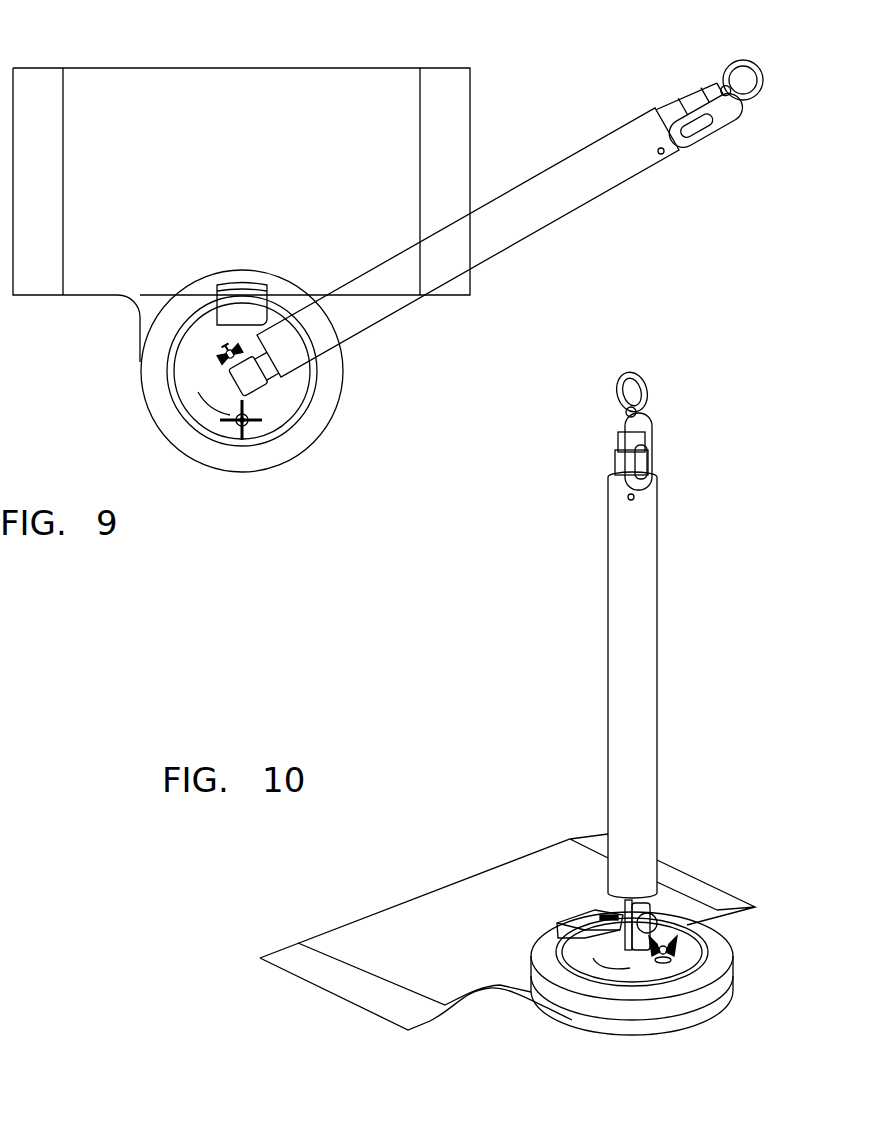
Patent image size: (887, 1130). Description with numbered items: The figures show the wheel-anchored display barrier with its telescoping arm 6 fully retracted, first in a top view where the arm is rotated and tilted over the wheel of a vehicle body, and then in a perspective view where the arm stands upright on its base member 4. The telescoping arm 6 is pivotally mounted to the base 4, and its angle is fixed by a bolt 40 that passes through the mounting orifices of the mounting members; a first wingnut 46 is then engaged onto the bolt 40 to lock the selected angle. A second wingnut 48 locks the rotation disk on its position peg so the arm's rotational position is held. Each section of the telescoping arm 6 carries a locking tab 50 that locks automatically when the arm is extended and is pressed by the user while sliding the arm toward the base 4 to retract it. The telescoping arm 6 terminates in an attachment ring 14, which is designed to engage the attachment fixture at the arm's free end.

In FIG. 9, the base member 4 is at (244, 68).
In FIG. 10, the base member 4 is at (433, 888).
In FIG. 10, the telescoping arm 6 is at (657, 680).
In FIG. 9, the attachment ring 14 is at (733, 62).
In FIG. 9, the bolt 40 is at (255, 392).
In FIG. 10, the bolt 40 is at (643, 927).
In FIG. 9, the first wingnut 46 is at (215, 357).
In FIG. 10, the first wingnut 46 is at (571, 930).
In FIG. 10, the second wingnut 48 is at (685, 940).
In FIG. 9, the locking tab 50 is at (661, 157).